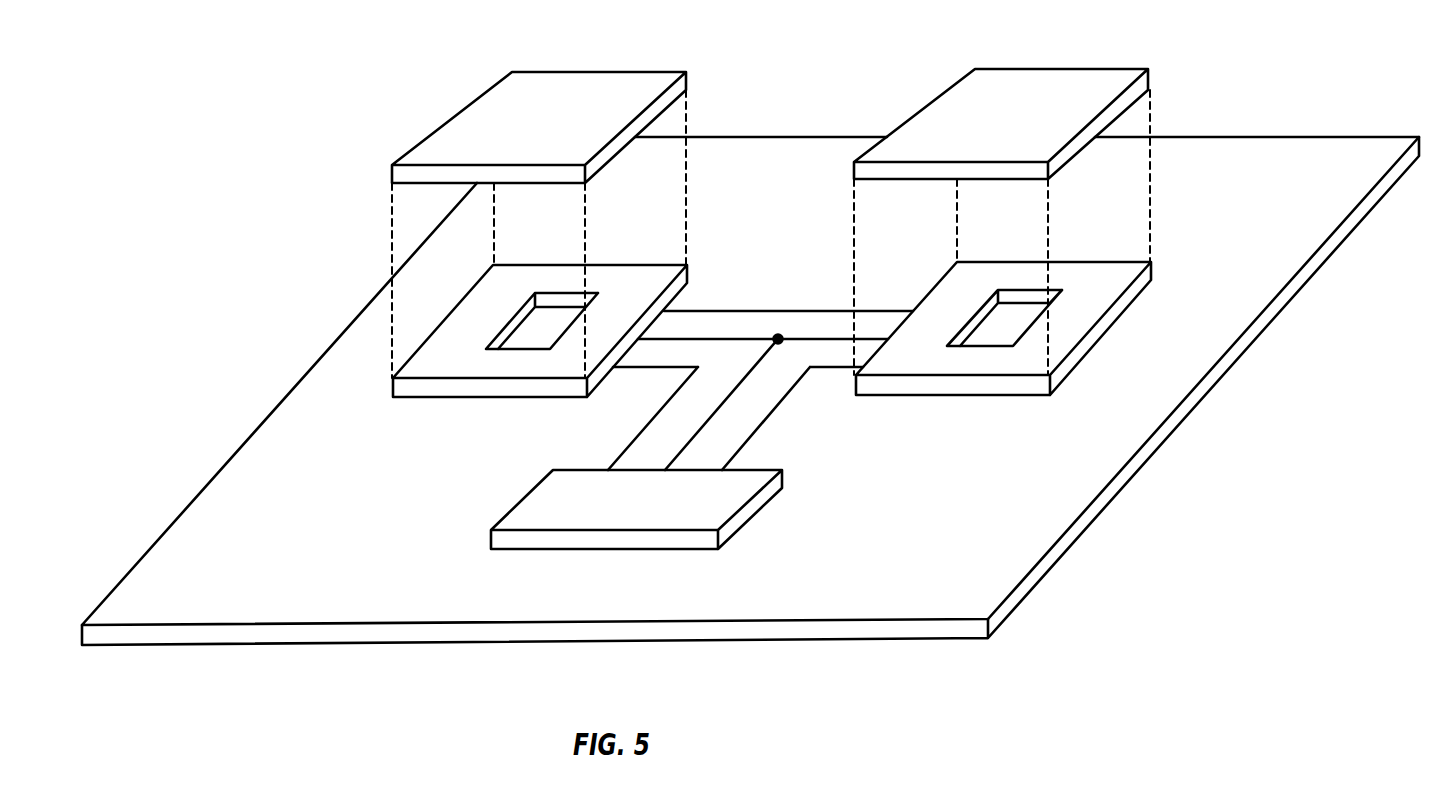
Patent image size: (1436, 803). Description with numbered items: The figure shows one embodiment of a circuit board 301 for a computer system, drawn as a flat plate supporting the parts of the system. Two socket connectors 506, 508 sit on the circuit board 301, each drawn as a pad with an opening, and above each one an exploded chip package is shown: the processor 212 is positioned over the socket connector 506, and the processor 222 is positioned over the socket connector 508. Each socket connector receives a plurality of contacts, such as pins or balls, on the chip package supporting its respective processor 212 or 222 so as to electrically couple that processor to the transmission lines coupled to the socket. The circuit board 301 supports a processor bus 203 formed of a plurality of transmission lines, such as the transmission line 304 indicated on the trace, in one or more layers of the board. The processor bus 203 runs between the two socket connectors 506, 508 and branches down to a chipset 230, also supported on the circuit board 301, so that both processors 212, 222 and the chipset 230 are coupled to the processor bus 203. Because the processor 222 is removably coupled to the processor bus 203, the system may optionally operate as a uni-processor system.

The circuit board 301 is at (750, 370).
The processor 212 is at (539, 205).
The processor 222 is at (1002, 204).
The socket connector 506 is at (540, 353).
The socket connector 508 is at (1040, 328).
The processor bus 203 is at (760, 369).
The transmission line 304 is at (814, 301).
The chipset 230 is at (668, 487).